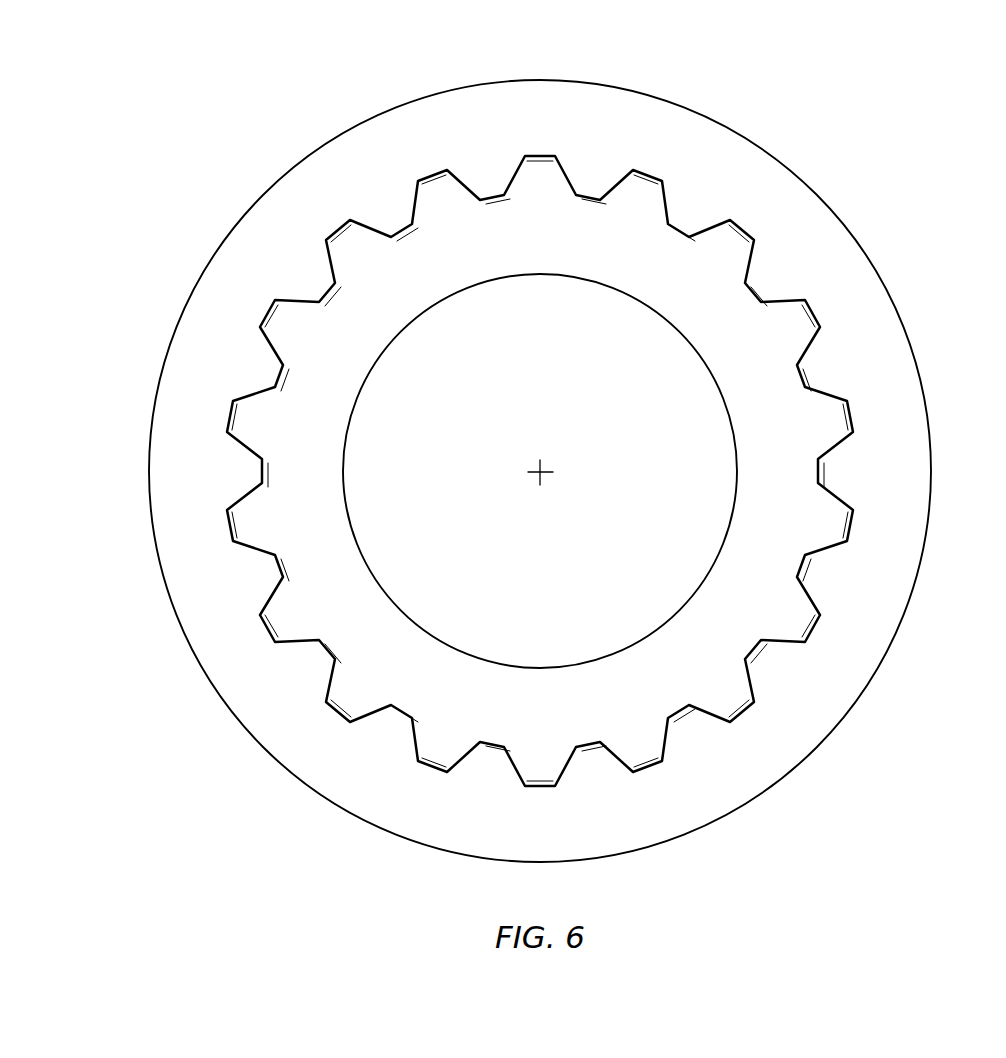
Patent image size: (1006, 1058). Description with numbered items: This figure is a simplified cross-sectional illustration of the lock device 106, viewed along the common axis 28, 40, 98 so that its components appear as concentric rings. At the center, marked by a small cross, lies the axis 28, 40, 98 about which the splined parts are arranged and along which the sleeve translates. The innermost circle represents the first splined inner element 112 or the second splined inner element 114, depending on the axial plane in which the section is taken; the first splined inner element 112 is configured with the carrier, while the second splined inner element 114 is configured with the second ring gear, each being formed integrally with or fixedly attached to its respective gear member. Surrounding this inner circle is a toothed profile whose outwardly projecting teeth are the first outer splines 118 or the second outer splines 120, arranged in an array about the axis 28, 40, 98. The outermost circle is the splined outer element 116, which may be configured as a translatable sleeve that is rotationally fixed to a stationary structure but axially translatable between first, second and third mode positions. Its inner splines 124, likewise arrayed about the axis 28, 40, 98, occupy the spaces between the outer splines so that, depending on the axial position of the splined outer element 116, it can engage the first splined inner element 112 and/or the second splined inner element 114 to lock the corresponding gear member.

The lock device 106 is at (568, 458).
The splined outer element 116 is at (887, 287).
The first splined inner element 112 is at (540, 471).
The second splined inner element 114 is at (716, 380).
The first outer splines 118 is at (589, 471).
The second outer splines 120 is at (807, 305).
The inner splines 124 is at (760, 297).
The axis 28 is at (553, 511).
The axis 40 is at (540, 472).
The axis 98 is at (546, 476).